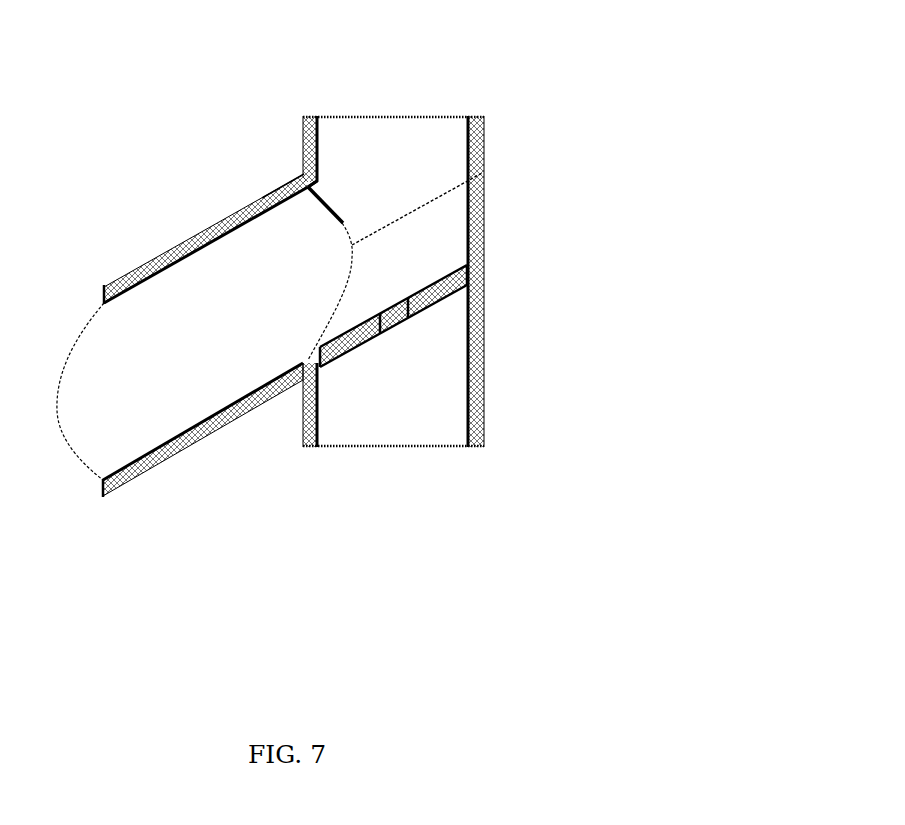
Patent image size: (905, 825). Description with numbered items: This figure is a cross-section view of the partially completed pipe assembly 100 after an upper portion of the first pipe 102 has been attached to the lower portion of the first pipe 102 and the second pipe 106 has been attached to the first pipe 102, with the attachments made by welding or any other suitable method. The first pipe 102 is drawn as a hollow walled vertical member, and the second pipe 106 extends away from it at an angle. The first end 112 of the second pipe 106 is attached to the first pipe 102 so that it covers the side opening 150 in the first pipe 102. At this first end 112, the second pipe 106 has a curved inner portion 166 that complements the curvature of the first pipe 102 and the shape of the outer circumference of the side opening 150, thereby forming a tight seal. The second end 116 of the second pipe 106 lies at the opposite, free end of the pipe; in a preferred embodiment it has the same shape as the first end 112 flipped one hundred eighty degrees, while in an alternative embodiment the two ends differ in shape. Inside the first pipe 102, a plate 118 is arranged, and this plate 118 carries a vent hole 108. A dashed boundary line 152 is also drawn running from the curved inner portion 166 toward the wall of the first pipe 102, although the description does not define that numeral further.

The pipe assembly 100 is at (517, 95).
The first pipe 102 is at (470, 312).
The second pipe 106 is at (168, 250).
The vent hole 108 is at (402, 312).
The first end 112 is at (290, 192).
The second end 116 is at (103, 288).
The plate 118 is at (438, 285).
The side opening 150 is at (323, 217).
The boundary line 152 is at (443, 200).
The curved inner portion 166 is at (334, 224).